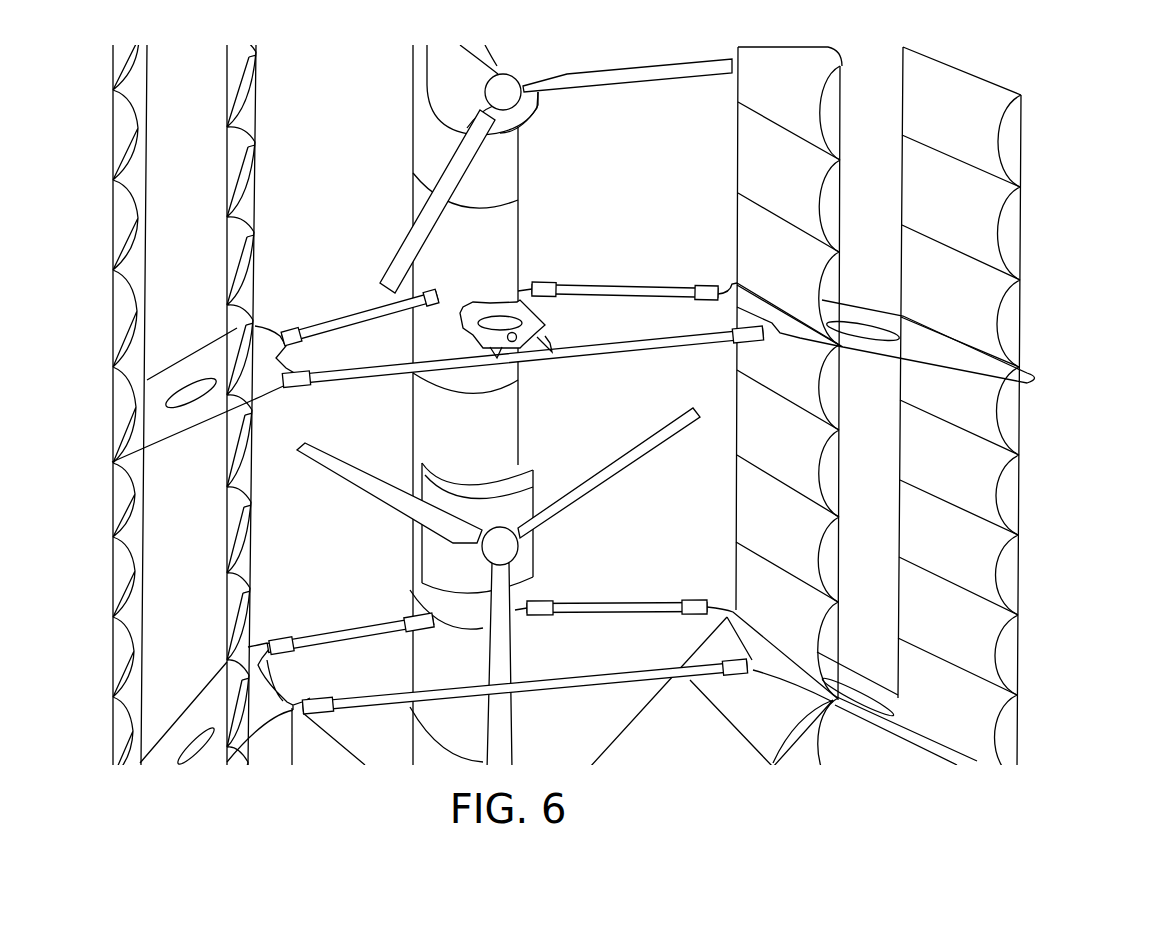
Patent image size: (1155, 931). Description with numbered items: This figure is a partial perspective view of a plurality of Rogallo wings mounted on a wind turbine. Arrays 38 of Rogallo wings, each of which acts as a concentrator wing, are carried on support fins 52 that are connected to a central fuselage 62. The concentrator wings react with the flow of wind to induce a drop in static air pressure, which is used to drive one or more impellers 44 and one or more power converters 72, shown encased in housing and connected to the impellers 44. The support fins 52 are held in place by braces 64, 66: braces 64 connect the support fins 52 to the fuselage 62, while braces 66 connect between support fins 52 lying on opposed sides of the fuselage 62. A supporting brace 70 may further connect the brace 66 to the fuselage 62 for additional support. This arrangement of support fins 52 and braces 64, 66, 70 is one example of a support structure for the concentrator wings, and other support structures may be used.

The array of Rogallo wings 38 is at (1060, 547).
The impeller 44 is at (608, 480).
The support fin 52 is at (210, 352).
The fuselage 62 is at (457, 448).
The brace 64 is at (328, 290).
The brace 66 is at (330, 387).
The supporting brace 70 is at (542, 320).
The power converter 72 is at (527, 462).